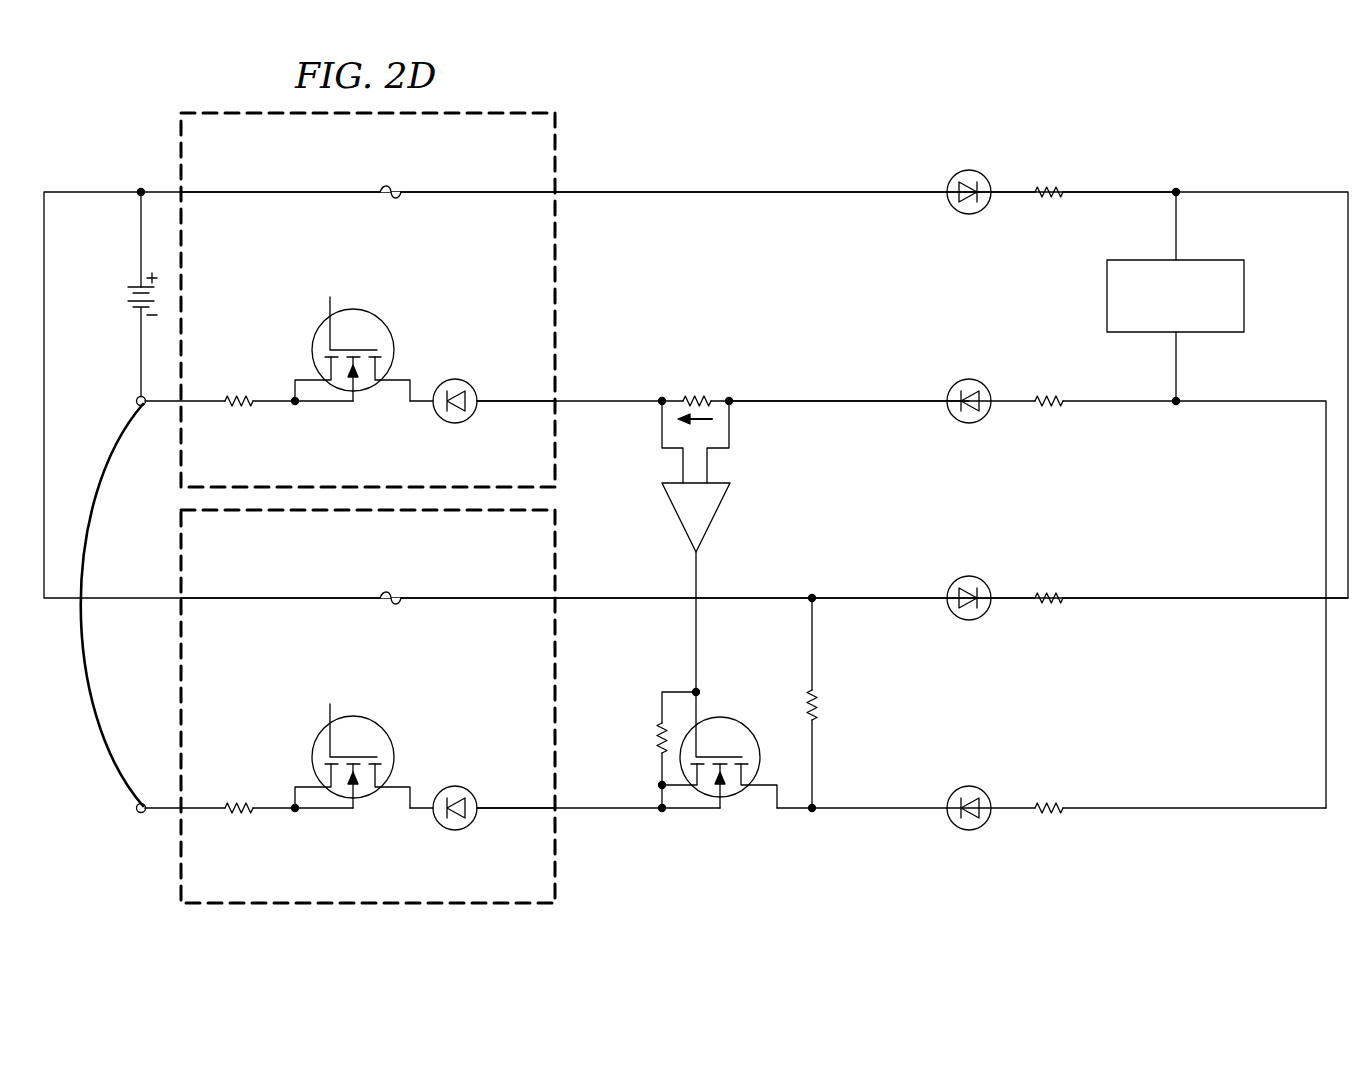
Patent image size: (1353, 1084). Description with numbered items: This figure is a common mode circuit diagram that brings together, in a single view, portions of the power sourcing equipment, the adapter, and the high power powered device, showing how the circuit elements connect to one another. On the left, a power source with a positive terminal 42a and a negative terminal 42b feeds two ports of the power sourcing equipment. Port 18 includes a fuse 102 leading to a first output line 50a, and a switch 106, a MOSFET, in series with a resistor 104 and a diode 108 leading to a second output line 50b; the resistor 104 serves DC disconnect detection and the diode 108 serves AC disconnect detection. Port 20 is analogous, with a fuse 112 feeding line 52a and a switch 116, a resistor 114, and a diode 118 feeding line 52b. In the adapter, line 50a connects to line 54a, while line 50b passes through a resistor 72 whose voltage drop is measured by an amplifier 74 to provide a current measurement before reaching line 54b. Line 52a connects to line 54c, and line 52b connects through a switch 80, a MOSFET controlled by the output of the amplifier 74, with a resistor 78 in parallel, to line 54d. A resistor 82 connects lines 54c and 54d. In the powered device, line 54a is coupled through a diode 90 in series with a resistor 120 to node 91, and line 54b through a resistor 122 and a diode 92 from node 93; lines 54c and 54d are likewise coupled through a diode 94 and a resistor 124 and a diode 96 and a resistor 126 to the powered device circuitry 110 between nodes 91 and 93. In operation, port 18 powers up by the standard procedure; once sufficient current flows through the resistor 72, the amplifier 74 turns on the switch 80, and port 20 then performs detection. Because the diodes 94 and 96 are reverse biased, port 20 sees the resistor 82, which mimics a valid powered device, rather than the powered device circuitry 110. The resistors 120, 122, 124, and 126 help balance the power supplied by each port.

The port 18 is at (181, 160).
The port 20 is at (181, 854).
The positive terminal of power source 42a is at (130, 286).
The negative terminal of power source 42b is at (130, 312).
The first output line of port 18 50a is at (505, 189).
The second output line of port 18 50b is at (518, 405).
The first output line of port 20 52a is at (505, 595).
The second output line of port 20 52b is at (518, 815).
The line 54a is at (895, 189).
The line 54b is at (895, 398).
The line 54c is at (895, 602).
The line 54d is at (895, 812).
The resistor 72 is at (692, 394).
The amplifier 74 is at (671, 527).
The resistor 78 is at (656, 740).
The switch 80 is at (733, 720).
The resistor 82 is at (820, 708).
The diode 90 is at (975, 169).
The node 91 is at (1170, 198).
The diode 92 is at (975, 378).
The node 93 is at (1170, 398).
The diode 94 is at (975, 621).
The diode 96 is at (975, 831).
The fuse 102 is at (385, 189).
The resistor 104 is at (238, 414).
The switch 106 is at (378, 320).
The diode 108 is at (452, 424).
The powered device circuitry 110 is at (1248, 302).
The fuse 112 is at (385, 595).
The resistor 114 is at (238, 820).
The switch 116 is at (368, 720).
The diode 118 is at (452, 831).
The resistor 120 is at (1050, 187).
The resistor 122 is at (1050, 396).
The resistor 124 is at (1050, 603).
The resistor 126 is at (1050, 813).